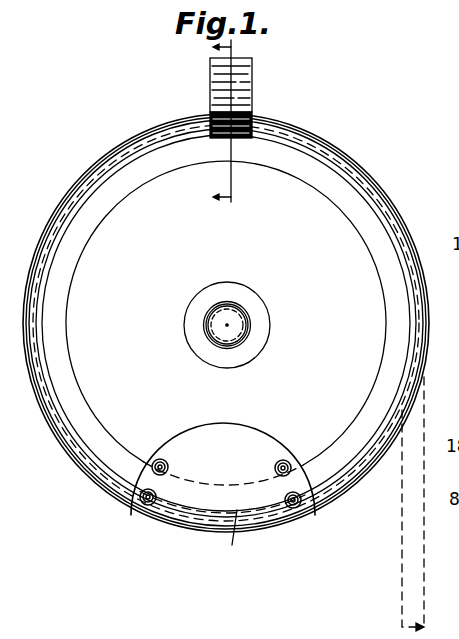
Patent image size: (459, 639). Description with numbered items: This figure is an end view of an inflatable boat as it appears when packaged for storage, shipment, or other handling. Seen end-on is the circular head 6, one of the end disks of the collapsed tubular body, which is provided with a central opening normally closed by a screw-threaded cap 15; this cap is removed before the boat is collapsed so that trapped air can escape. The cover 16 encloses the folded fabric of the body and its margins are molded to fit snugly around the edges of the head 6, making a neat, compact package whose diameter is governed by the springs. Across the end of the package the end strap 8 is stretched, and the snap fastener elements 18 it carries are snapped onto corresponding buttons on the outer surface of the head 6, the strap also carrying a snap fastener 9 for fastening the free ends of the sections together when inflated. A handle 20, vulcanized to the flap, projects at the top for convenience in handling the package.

The head 6 is at (150, 200).
The end strap 8 is at (234, 301).
The snap fastener 9 is at (301, 530).
The screw-threaded cap 15 is at (225, 305).
The cover 16 is at (380, 192).
The snap fastener element 18 is at (276, 465).
The handle 20 is at (255, 86).